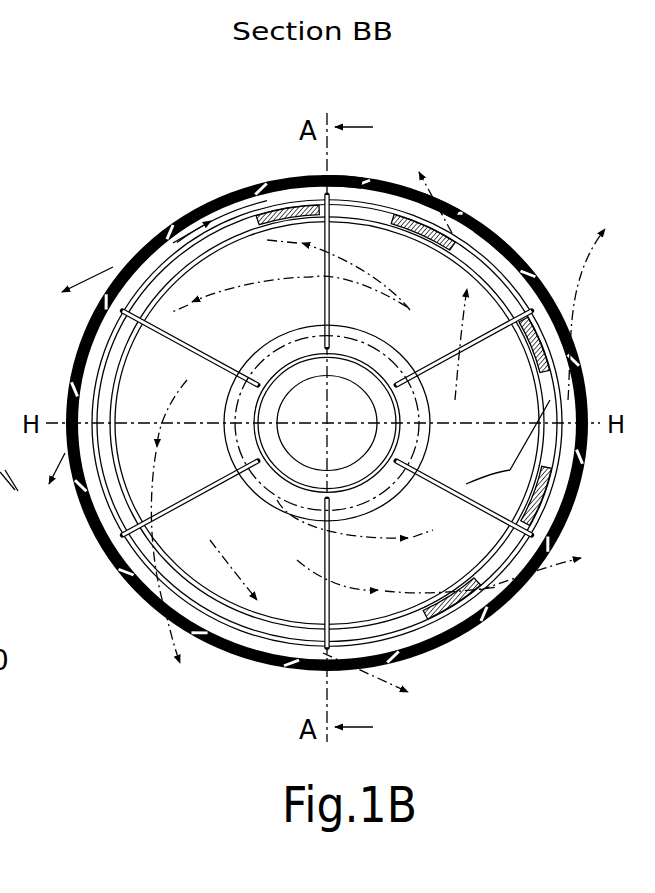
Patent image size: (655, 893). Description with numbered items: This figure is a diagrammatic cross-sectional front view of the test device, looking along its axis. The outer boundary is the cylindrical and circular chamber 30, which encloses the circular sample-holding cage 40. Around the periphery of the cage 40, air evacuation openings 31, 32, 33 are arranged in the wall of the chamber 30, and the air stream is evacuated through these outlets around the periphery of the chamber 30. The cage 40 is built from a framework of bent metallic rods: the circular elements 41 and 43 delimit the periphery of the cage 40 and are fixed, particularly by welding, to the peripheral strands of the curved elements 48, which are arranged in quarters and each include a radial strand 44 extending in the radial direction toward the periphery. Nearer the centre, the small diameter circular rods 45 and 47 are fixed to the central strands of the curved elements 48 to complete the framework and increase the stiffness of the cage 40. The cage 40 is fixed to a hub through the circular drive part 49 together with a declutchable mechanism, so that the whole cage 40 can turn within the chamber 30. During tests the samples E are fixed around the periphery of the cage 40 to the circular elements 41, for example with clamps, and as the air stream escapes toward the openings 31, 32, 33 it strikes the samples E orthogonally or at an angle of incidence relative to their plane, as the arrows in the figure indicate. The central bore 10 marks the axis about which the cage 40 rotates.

The shaft bore 10 is at (350, 419).
The chamber 30 is at (268, 178).
The air evacuation opening 31 is at (373, 172).
The air evacuation opening 32 is at (440, 182).
The air evacuation opening 33 is at (497, 217).
The sample-holding cage 40 is at (226, 218).
The circular element 41 is at (168, 260).
The circular element 43 is at (168, 282).
The radial strand 44 is at (157, 340).
The small diameter circular rod 45 is at (257, 460).
The small diameter circular rod 47 is at (318, 642).
The curved element 48 is at (466, 484).
The circular drive part 49 is at (412, 424).
The sample E is at (268, 208).